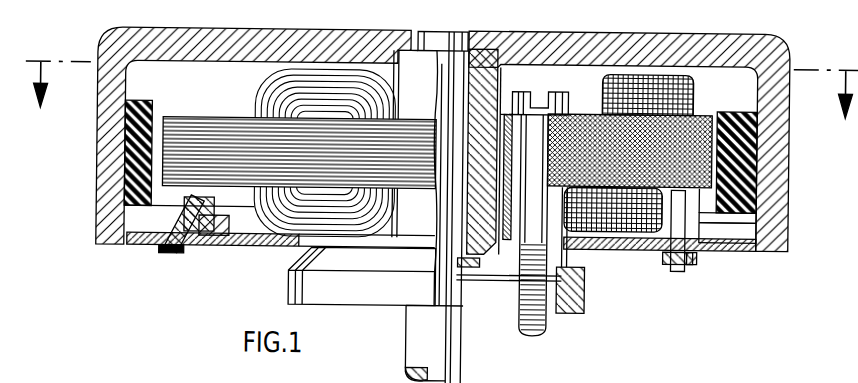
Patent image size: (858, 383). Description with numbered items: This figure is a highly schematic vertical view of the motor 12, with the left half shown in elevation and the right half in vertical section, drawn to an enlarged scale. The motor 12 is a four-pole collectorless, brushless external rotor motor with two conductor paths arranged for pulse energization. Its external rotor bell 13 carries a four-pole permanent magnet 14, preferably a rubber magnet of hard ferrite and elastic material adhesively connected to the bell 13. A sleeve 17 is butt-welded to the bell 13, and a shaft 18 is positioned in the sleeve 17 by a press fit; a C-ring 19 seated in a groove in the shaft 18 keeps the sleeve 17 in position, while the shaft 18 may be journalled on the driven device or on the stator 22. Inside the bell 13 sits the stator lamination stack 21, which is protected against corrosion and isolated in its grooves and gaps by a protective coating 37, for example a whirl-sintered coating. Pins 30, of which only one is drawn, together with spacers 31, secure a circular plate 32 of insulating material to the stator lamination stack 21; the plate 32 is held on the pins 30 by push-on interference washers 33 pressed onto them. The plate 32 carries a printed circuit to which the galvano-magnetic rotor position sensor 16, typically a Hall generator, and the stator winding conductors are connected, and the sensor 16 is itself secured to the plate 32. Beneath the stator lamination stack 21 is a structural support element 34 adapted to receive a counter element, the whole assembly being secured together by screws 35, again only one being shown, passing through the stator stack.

The motor 12 is at (88, 148).
The external rotor bell 13 is at (562, 27).
The permanent magnet 14 is at (742, 173).
The rotor position sensor 16 is at (163, 255).
The sleeve 17 is at (488, 88).
The shaft 18 is at (464, 354).
The C-ring 19 is at (481, 258).
The stator lamination stack 21 is at (295, 157).
The stator 22 is at (625, 246).
The pin 30 is at (684, 266).
The spacer 31 is at (685, 216).
The circular plate 32 is at (263, 246).
The push-on interference washer 33 is at (702, 248).
The structural support element 34 is at (577, 308).
The screw 35 is at (549, 92).
The protective coating 37 is at (702, 216).